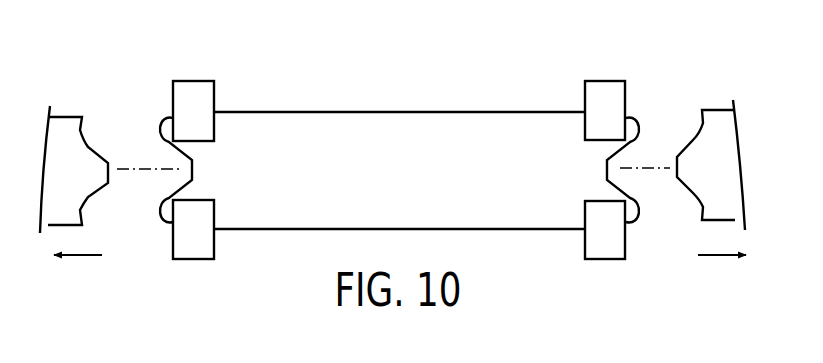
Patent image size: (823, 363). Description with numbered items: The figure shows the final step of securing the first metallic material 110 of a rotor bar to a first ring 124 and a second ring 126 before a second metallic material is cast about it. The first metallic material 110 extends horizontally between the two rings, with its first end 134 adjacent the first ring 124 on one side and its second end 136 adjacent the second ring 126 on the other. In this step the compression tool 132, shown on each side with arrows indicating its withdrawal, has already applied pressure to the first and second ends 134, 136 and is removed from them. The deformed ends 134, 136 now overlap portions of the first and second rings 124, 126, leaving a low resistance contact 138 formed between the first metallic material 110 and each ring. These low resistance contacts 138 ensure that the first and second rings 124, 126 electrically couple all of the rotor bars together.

The first metallic material 110 is at (375, 184).
The first ring 124 is at (212, 125).
The second ring 126 is at (623, 125).
The compression tool 132 is at (55, 186).
The first end 134 is at (137, 161).
The second end 136 is at (651, 157).
The low resistance contact 138 is at (156, 111).